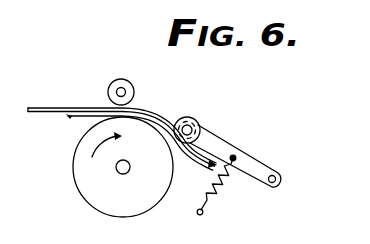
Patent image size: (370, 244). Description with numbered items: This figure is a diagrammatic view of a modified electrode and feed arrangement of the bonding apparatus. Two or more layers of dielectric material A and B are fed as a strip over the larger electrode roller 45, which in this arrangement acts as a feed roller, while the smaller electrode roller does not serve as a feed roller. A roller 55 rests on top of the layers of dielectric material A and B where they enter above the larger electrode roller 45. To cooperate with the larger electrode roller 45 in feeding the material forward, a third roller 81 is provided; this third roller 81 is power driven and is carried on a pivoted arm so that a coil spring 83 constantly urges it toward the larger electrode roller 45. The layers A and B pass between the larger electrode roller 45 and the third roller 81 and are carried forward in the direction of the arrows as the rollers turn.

The larger electrode roller 45 is at (89, 185).
The roller 55 is at (147, 62).
The third roller 81 is at (194, 118).
The coil spring 83 is at (226, 186).
The layer of dielectric material A is at (47, 107).
The layer of dielectric material B is at (69, 117).